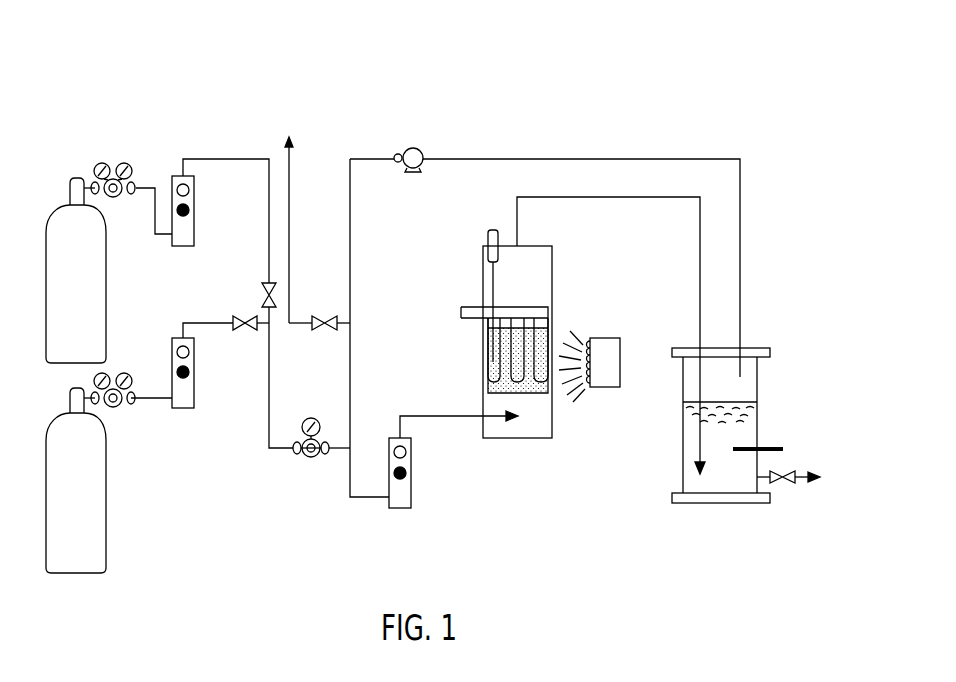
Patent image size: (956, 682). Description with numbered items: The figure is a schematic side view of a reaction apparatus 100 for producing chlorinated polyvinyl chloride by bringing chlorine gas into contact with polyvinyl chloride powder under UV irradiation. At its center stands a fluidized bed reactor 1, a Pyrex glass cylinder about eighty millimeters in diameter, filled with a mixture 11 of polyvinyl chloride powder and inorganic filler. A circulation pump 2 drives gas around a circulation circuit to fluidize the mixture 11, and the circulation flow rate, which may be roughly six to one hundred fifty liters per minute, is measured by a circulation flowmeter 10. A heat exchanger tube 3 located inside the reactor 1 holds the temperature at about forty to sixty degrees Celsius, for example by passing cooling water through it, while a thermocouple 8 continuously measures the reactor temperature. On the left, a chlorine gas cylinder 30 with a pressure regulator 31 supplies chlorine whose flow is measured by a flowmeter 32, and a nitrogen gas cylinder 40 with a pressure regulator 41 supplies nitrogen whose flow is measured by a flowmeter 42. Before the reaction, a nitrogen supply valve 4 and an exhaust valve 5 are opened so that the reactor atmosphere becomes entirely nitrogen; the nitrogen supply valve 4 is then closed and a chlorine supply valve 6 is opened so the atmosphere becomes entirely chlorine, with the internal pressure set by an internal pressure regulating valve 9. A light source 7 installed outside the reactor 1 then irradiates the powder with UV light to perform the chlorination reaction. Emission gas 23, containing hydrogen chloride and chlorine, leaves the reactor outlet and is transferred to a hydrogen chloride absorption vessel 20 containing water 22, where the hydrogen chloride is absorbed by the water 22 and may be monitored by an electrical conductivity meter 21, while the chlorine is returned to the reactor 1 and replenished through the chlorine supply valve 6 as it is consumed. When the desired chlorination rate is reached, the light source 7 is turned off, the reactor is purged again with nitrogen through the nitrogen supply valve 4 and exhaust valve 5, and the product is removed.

The reaction apparatus 100 is at (187, 72).
The fluidized bed reactor 1 is at (518, 440).
The circulation pump 2 is at (413, 147).
The heat exchanger tube 3 is at (528, 307).
The nitrogen supply valve 4 is at (245, 332).
The exhaust valve 5 is at (318, 316).
The chlorine supply valve 6 is at (261, 293).
The light source 7 is at (621, 362).
The thermocouple 8 is at (493, 229).
The internal pressure regulating valve 9 is at (311, 458).
The circulation flowmeter 10 is at (412, 478).
The mixture of polyvinyl chloride powder and inorganic filler 11 is at (483, 390).
The hydrogen chloride absorption vessel 20 is at (719, 504).
The electrical conductivity meter 21 is at (784, 449).
The water 22 is at (750, 420).
The emission gas 23 is at (691, 381).
The chlorine gas cylinder 30 is at (107, 287).
The pressure regulator 31 is at (104, 162).
The flowmeter 32 is at (195, 197).
The nitrogen gas cylinder 40 is at (107, 495).
The pressure regulator 41 is at (126, 370).
The flowmeter 42 is at (195, 403).